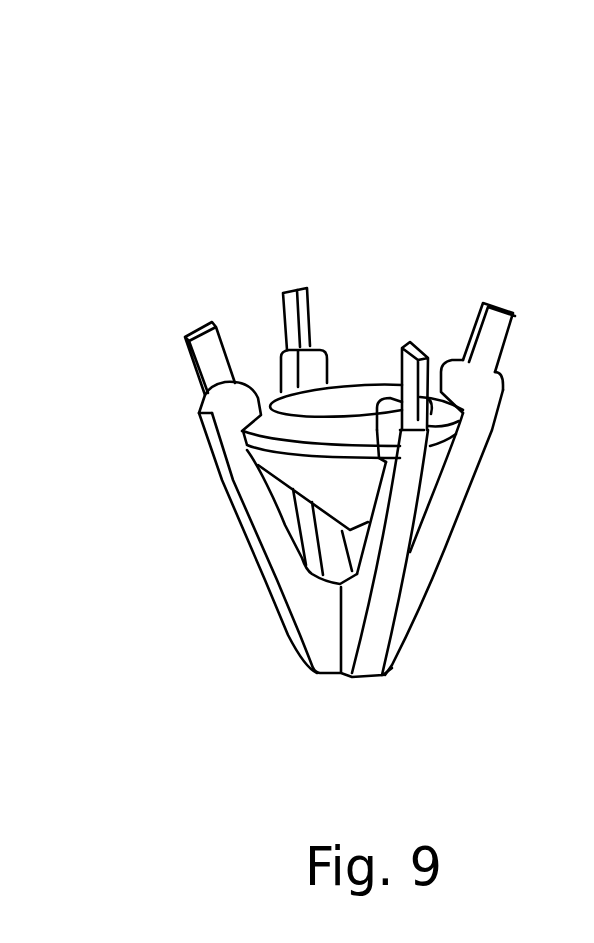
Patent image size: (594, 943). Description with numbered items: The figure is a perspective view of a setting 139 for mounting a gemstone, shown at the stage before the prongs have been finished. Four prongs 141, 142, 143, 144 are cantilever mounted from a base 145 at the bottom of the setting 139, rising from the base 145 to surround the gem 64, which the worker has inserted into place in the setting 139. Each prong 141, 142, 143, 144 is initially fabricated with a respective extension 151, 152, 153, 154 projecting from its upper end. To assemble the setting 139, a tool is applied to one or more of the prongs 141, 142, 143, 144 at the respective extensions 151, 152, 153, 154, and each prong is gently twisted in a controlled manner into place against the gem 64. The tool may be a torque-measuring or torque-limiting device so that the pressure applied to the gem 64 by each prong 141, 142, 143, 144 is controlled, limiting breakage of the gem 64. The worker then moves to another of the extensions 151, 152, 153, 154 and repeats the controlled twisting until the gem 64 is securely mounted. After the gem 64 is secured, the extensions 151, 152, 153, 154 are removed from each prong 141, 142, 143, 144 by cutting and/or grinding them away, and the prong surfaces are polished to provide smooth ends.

The setting 139 is at (251, 137).
The gem 64 is at (452, 419).
The prong 141 is at (227, 508).
The prong 142 is at (281, 362).
The prong 143 is at (440, 528).
The prong 144 is at (392, 597).
The base 145 is at (330, 678).
The extension 151 is at (192, 357).
The extension 152 is at (276, 269).
The extension 153 is at (506, 342).
The extension 154 is at (405, 357).